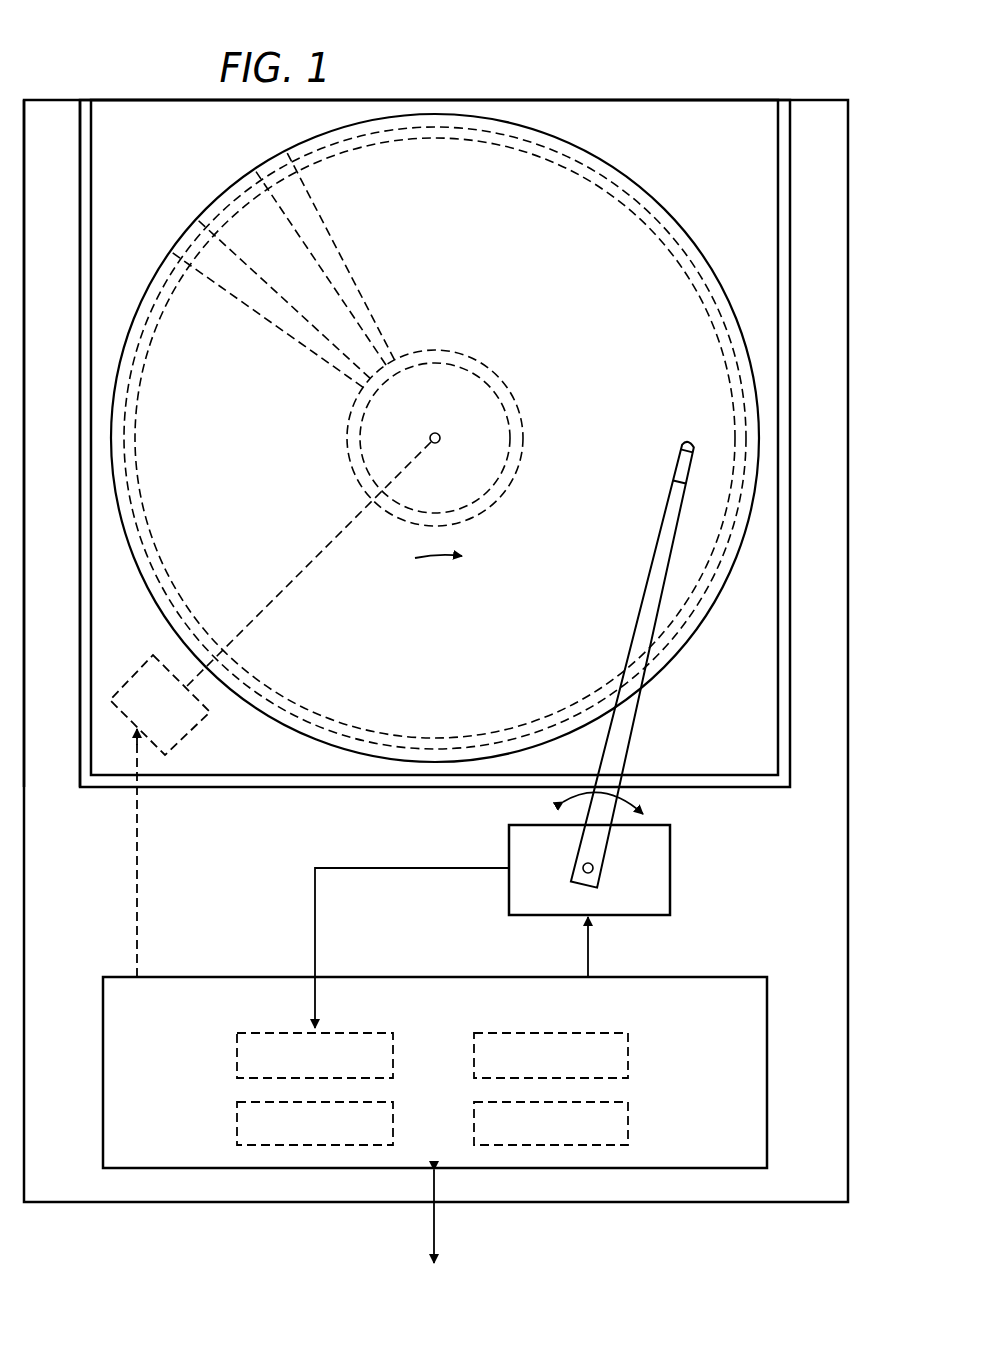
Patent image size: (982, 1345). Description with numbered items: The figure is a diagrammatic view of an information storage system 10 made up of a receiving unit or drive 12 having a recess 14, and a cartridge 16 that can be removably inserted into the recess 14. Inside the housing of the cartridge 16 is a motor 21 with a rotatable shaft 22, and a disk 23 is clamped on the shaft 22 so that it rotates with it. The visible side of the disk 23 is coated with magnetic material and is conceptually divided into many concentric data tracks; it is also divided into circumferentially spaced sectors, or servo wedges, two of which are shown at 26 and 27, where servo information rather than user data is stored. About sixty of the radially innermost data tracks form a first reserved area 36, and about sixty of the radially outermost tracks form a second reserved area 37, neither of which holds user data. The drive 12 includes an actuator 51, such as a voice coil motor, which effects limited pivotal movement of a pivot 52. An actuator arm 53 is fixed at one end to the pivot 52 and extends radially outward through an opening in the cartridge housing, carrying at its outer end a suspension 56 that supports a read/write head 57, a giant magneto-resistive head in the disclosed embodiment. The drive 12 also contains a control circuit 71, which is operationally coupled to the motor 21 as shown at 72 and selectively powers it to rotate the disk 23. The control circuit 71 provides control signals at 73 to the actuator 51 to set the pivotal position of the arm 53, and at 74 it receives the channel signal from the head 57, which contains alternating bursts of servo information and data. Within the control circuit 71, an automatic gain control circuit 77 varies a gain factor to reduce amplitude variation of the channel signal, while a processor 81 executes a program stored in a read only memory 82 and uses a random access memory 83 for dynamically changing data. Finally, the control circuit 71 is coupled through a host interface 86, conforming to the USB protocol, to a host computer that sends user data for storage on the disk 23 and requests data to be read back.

The information storage system 10 is at (609, 57).
The drive 12 is at (52, 100).
The recess 14 is at (778, 698).
The cartridge 16 is at (509, 100).
The motor 21 is at (188, 733).
The rotatable shaft 22 is at (441, 435).
The disk 23 is at (620, 180).
The sector 26 is at (287, 333).
The sector 27 is at (341, 247).
The first reserved area 36 is at (442, 350).
The second reserved area 37 is at (132, 455).
The actuator 51 is at (670, 880).
The pivot 52 is at (594, 868).
The actuator arm 53 is at (658, 562).
The suspension 56 is at (681, 470).
The read/write head 57 is at (692, 441).
The control circuit 71 is at (262, 973).
The operational coupling to motor 72 is at (137, 868).
The control signals 73 is at (592, 947).
The channel signal 74 is at (411, 870).
The automatic gain control (AGC) circuit 77 is at (237, 1055).
The processor 81 is at (628, 1057).
The read only memory (ROM) 82 is at (237, 1125).
The random access memory (RAM) 83 is at (628, 1125).
The host interface 86 is at (434, 1222).